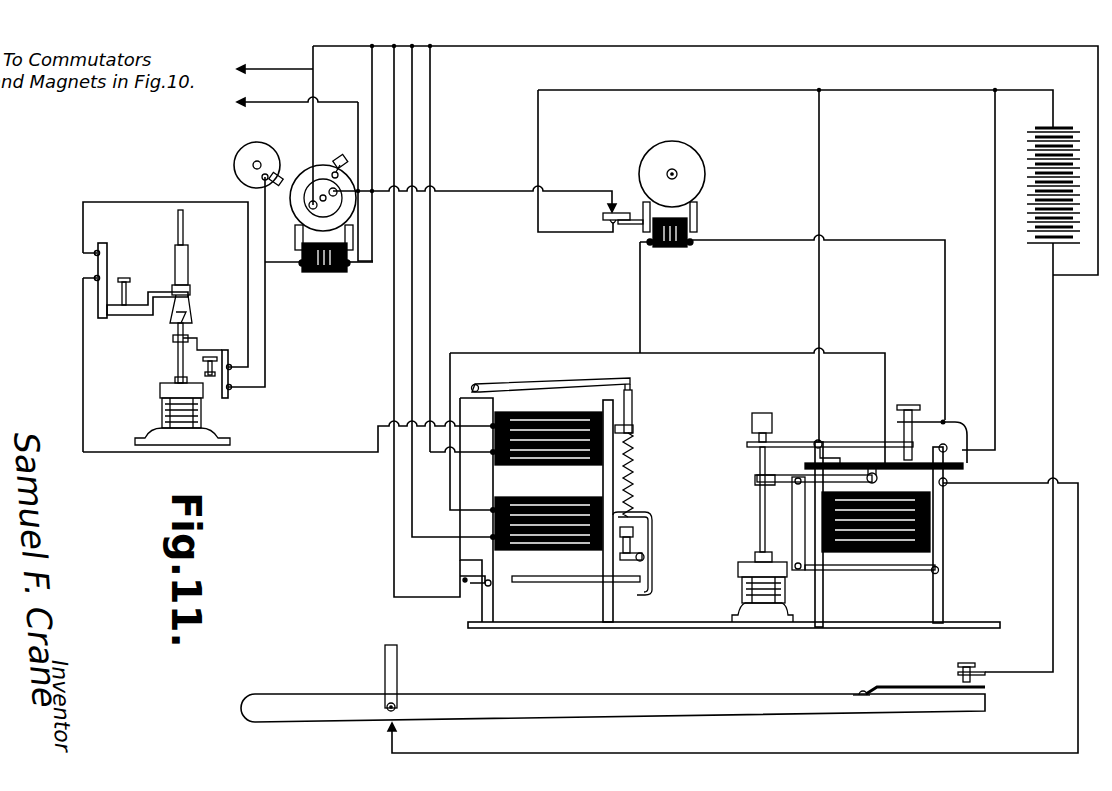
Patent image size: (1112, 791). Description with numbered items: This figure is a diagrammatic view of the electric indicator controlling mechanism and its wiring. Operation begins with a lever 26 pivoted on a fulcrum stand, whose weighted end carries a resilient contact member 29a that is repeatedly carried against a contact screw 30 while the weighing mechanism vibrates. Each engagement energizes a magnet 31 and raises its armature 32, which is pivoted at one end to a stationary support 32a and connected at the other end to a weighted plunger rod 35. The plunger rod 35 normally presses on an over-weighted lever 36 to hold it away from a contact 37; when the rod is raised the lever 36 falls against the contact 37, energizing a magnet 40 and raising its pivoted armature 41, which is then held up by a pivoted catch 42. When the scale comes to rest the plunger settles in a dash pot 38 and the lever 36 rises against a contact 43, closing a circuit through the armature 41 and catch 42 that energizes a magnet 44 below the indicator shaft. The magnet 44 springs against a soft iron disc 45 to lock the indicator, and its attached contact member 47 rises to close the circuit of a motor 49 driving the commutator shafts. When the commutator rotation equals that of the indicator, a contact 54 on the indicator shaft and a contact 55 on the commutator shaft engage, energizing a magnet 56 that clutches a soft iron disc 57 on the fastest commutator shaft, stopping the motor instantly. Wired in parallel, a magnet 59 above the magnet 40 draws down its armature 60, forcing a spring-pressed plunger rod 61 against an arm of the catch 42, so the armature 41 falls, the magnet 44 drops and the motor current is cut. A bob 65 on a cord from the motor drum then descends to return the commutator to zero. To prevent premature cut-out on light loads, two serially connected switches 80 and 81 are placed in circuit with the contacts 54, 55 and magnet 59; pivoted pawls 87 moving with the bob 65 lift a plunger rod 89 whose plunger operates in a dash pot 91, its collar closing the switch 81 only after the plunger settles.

The lever 26 is at (512, 703).
The resilient contact member 29a is at (934, 690).
The contact screw 30 is at (960, 662).
The magnet 31 is at (935, 522).
The armature 32 is at (893, 572).
The stationary support 32a is at (940, 572).
The weighted plunger rod 35 is at (760, 461).
The over-weighted lever 36 is at (858, 442).
The contact 37 is at (900, 469).
The dash pot 38 is at (740, 596).
The magnet 40 is at (545, 550).
The pivoted armature 41 is at (503, 585).
The pivoted catch 42 is at (646, 594).
The contact 43 is at (908, 405).
The magnet 44 is at (680, 250).
The soft iron disc 45 is at (697, 162).
The contact member 47 is at (603, 217).
The motor 49 is at (330, 165).
The contact 54 is at (274, 174).
The contact 55 is at (262, 178).
The magnet 56 is at (332, 272).
The soft iron disc 57 is at (298, 208).
The magnet 59 is at (560, 406).
The armature 60 is at (592, 379).
The spring-pressed plunger rod 61 is at (636, 403).
The bob 65 is at (189, 259).
The switch 80 is at (152, 291).
The switch 81 is at (223, 354).
The pivoted pawls 87 is at (192, 310).
The plunger rod 89 is at (177, 367).
The dash pot 91 is at (202, 430).